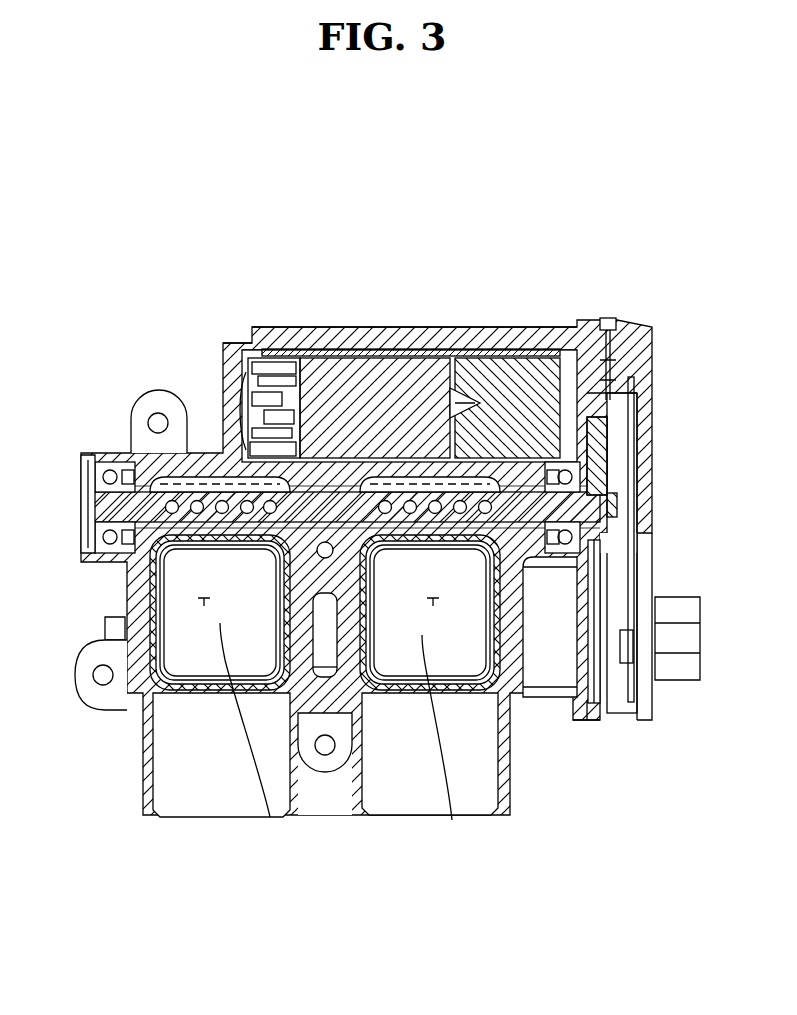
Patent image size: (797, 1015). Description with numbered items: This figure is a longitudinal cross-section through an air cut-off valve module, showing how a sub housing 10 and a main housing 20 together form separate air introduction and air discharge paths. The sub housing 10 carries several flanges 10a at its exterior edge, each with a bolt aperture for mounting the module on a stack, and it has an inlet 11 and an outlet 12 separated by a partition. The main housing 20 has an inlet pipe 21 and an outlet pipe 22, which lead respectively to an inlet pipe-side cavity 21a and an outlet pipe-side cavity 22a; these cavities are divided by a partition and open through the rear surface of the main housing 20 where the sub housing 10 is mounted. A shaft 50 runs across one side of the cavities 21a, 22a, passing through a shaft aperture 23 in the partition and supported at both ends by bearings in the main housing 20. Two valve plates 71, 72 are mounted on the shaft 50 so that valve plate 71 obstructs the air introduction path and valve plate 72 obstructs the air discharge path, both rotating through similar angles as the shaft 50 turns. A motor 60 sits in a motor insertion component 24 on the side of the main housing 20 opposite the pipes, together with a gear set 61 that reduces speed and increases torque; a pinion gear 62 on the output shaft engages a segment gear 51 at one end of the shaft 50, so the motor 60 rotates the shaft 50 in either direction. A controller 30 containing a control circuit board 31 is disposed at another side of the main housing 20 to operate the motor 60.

The sub housing 10 is at (330, 768).
The flange 10a is at (170, 410).
The inlet 11 is at (520, 700).
The outlet 12 is at (175, 610).
The main housing 20 is at (127, 583).
The inlet pipe 21 is at (400, 777).
The inlet pipe-side cavity 21a is at (452, 820).
The outlet pipe 22 is at (185, 777).
The outlet pipe-side cavity 22a is at (273, 800).
The shaft aperture 23 is at (422, 635).
The motor insertion component 24 is at (500, 332).
The controller 30 is at (657, 373).
The control circuit board 31 is at (637, 577).
The shaft 50 is at (108, 497).
The segment gear 51 is at (600, 453).
The motor 60 is at (355, 378).
The gear set 61 is at (472, 360).
The pinion gear 62 is at (605, 323).
The valve plate 71 is at (433, 606).
The valve plate 72 is at (203, 606).